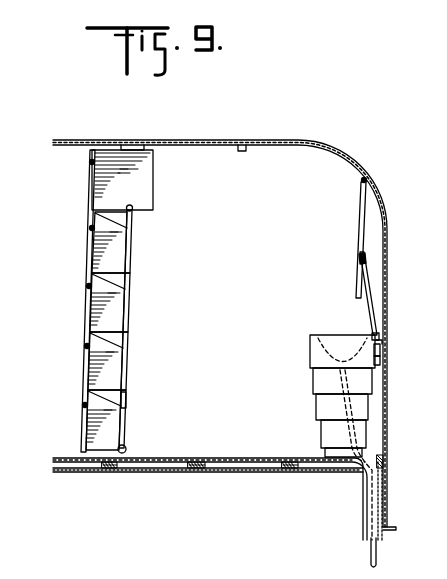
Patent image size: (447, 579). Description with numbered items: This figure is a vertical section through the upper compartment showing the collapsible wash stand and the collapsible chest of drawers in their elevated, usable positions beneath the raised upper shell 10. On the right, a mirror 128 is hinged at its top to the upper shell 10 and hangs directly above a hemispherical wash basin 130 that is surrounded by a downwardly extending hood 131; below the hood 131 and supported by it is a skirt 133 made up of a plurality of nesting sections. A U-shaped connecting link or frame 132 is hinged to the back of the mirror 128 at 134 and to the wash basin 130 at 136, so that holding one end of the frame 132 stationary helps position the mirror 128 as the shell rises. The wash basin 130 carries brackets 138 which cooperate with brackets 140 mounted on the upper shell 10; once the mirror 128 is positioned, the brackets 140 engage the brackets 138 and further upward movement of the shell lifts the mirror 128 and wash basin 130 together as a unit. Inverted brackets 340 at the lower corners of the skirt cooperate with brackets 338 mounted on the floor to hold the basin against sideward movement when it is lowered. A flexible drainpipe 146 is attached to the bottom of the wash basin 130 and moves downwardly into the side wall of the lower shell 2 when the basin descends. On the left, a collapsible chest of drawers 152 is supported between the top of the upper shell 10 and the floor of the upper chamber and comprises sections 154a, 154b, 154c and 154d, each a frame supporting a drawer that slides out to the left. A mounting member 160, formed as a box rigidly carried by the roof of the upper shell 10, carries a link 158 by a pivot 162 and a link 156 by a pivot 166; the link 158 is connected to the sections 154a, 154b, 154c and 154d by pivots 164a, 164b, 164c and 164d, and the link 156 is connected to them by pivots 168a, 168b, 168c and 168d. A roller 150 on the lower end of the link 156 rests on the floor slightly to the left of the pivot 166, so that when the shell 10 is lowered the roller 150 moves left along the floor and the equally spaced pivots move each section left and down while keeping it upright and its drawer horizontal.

The upper shell 10 is at (311, 146).
The lower shell 2 is at (362, 518).
The mirror 128 is at (360, 208).
The wash basin 130 is at (318, 385).
The hood 131 is at (315, 352).
The connecting link or frame 132 is at (369, 312).
The skirt 133 is at (315, 401).
The hinge 134 is at (368, 258).
The hinge 136 is at (380, 334).
The bracket 138 is at (382, 346).
The bracket 140 is at (382, 352).
The inverted bracket 340 is at (381, 362).
The flexible drainpipe 146 is at (346, 409).
The roller 150 is at (127, 451).
The collapsible chest of drawers 152 is at (110, 301).
The section 154a is at (90, 432).
The section 154b is at (110, 368).
The section 154c is at (113, 303).
The section 154d is at (118, 250).
The link 156 is at (124, 400).
The link 158 is at (90, 256).
The mounting member 160 is at (143, 168).
The pivot 162 is at (90, 163).
The pivot 164a is at (83, 404).
The pivot 164b is at (85, 346).
The pivot 164c is at (87, 285).
The pivot 164d is at (90, 226).
The pivot 166 is at (133, 207).
The pivot 168a is at (124, 440).
The pivot 168b is at (124, 383).
The pivot 168c is at (126, 326).
The pivot 168d is at (130, 265).
The bracket 338 is at (381, 456).